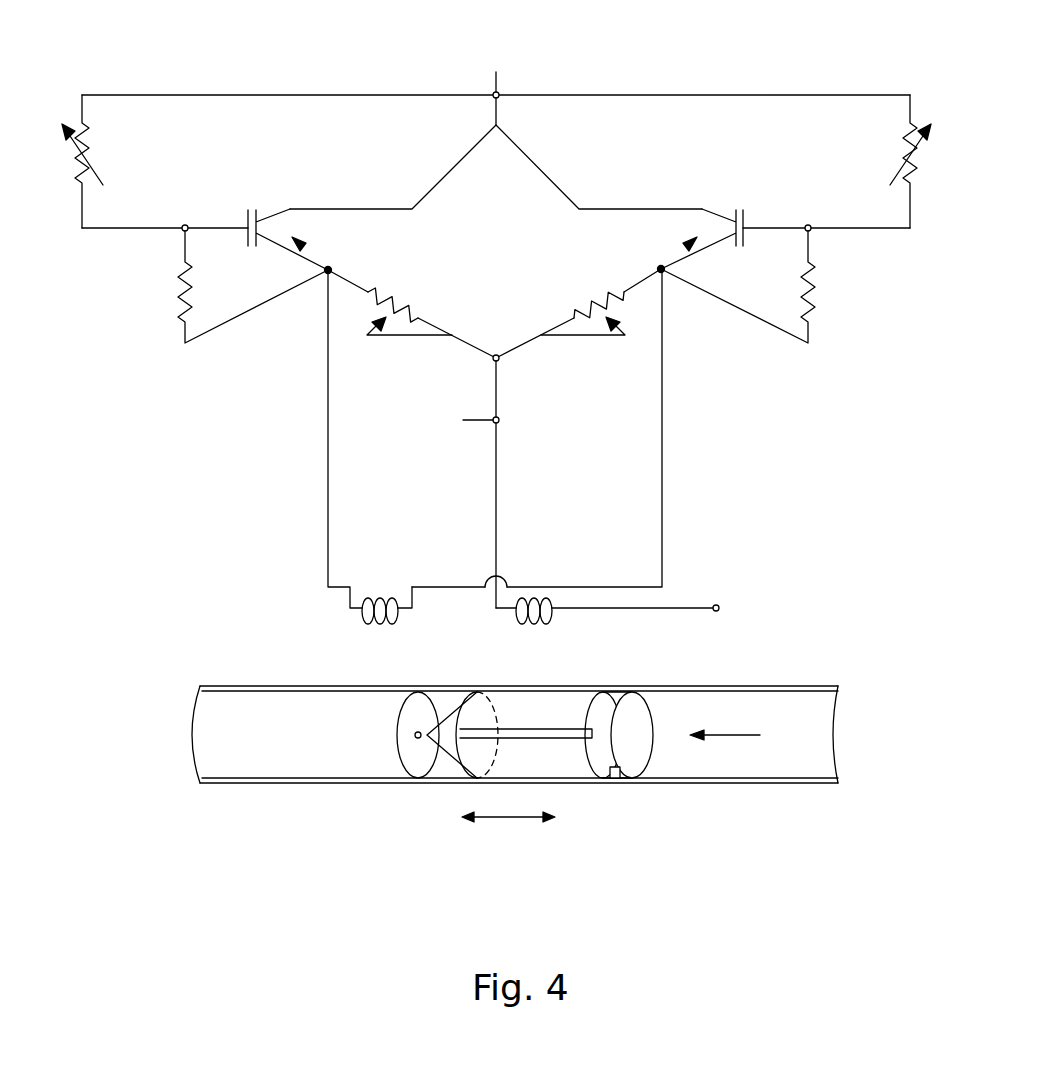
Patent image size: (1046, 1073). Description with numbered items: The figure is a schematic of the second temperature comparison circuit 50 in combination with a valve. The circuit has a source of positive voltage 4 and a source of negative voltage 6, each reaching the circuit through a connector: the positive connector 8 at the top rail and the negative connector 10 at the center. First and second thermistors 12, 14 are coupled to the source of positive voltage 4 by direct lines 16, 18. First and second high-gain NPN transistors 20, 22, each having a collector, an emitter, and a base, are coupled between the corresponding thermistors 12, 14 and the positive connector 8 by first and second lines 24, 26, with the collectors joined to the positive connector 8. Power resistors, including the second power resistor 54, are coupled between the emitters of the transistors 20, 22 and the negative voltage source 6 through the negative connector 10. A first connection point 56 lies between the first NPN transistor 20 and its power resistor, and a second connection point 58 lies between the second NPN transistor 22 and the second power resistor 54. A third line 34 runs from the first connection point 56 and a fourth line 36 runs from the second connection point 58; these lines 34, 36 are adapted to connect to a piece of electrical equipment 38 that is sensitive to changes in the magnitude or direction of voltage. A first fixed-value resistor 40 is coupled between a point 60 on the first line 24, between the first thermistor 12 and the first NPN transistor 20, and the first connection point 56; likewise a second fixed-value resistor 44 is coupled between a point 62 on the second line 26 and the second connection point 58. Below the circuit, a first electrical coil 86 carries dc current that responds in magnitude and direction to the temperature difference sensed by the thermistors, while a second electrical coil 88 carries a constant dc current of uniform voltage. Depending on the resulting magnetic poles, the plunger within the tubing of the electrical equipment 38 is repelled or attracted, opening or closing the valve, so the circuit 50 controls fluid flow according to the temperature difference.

The source of positive voltage 4 is at (496, 72).
The source of negative voltage 6 is at (476, 424).
The positive connector 8 is at (493, 95).
The negative connector 10 is at (494, 418).
The first thermistor 12 is at (80, 123).
The second thermistor 14 is at (912, 123).
The direct line 16 is at (268, 95).
The direct line 18 is at (695, 95).
The first high-gain NPN transistor 20 is at (247, 212).
The second high-gain NPN transistor 22 is at (745, 212).
The first line 24 is at (382, 209).
The second line 26 is at (615, 209).
The third line 34 is at (328, 424).
The fourth line 36 is at (662, 422).
The piece of electrical equipment 38 is at (708, 826).
The first fixed-value resistor 40 is at (178, 302).
The second fixed-value resistor 44 is at (818, 305).
The second temperature comparison circuit 50 is at (786, 438).
The second power resistor 54 is at (413, 312).
The first connection point 56 is at (326, 273).
The second connection point 58 is at (664, 272).
The point 60 is at (183, 230).
The point 62 is at (810, 230).
The first electrical coil 86 is at (358, 620).
The second electrical coil 88 is at (557, 612).